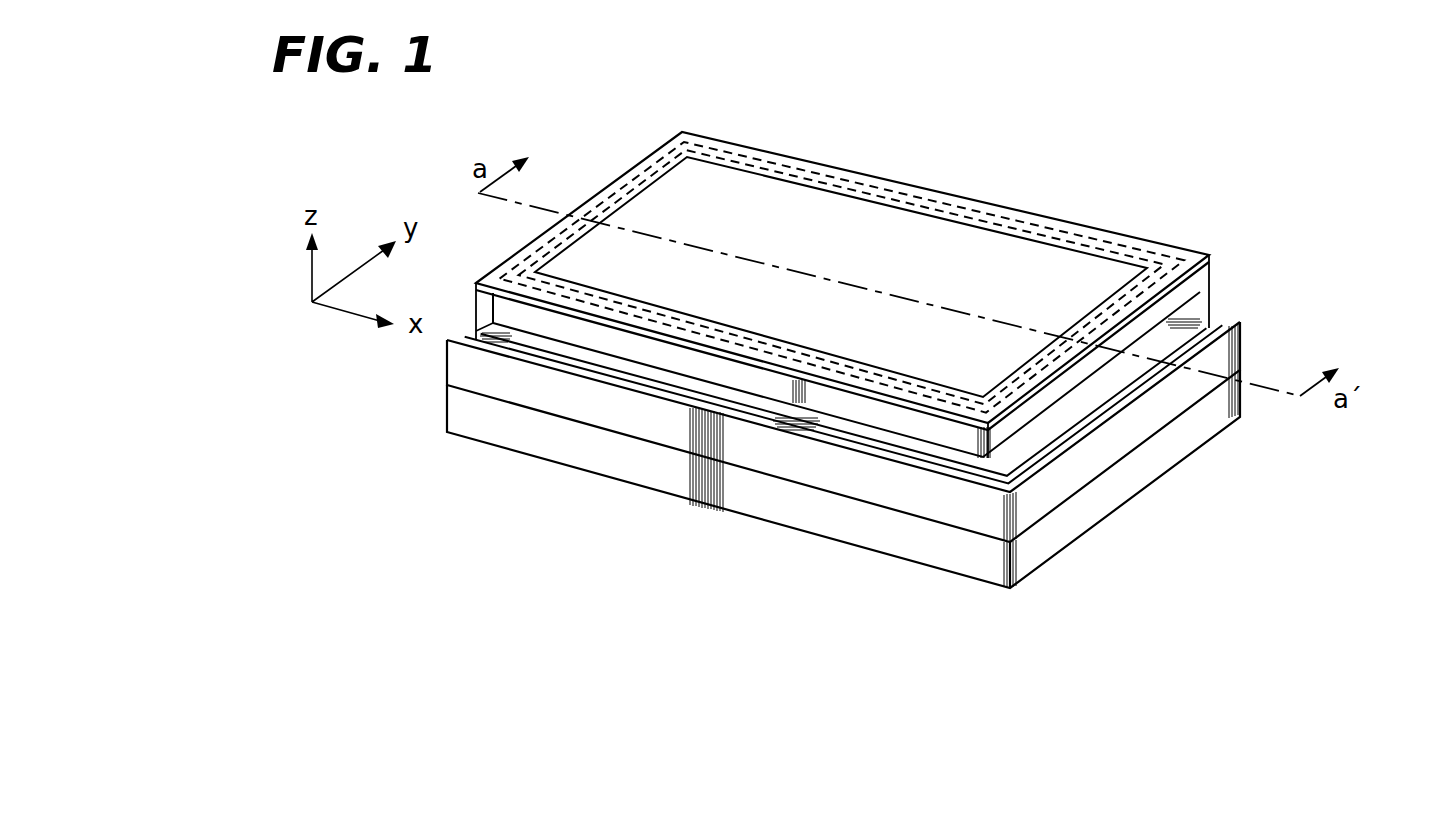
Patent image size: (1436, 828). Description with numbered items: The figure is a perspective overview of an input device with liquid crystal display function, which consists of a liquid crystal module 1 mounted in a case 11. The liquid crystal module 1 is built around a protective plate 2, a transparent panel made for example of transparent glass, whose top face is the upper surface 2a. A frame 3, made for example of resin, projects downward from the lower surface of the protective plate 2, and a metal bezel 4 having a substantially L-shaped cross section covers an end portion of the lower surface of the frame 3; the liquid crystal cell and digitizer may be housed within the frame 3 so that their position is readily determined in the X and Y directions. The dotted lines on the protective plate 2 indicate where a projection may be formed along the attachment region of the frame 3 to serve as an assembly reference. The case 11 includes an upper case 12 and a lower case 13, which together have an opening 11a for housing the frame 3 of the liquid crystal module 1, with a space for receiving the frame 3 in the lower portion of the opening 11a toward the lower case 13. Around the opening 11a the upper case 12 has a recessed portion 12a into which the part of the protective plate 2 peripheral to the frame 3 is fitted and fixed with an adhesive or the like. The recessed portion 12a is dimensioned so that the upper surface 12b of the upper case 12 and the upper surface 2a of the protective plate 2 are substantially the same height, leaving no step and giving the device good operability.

The liquid crystal module 1 is at (950, 163).
The protective plate 2 is at (1030, 265).
The upper surface of the protective plate 2a is at (1198, 252).
The frame 3 is at (1187, 294).
The metal bezel 4 is at (1027, 428).
The case 11 is at (606, 556).
The opening 11a is at (1070, 408).
The upper case 12 is at (752, 438).
The recessed portion 12a is at (1232, 349).
The upper surface of the upper case 12b is at (1025, 480).
The lower case 13 is at (876, 533).